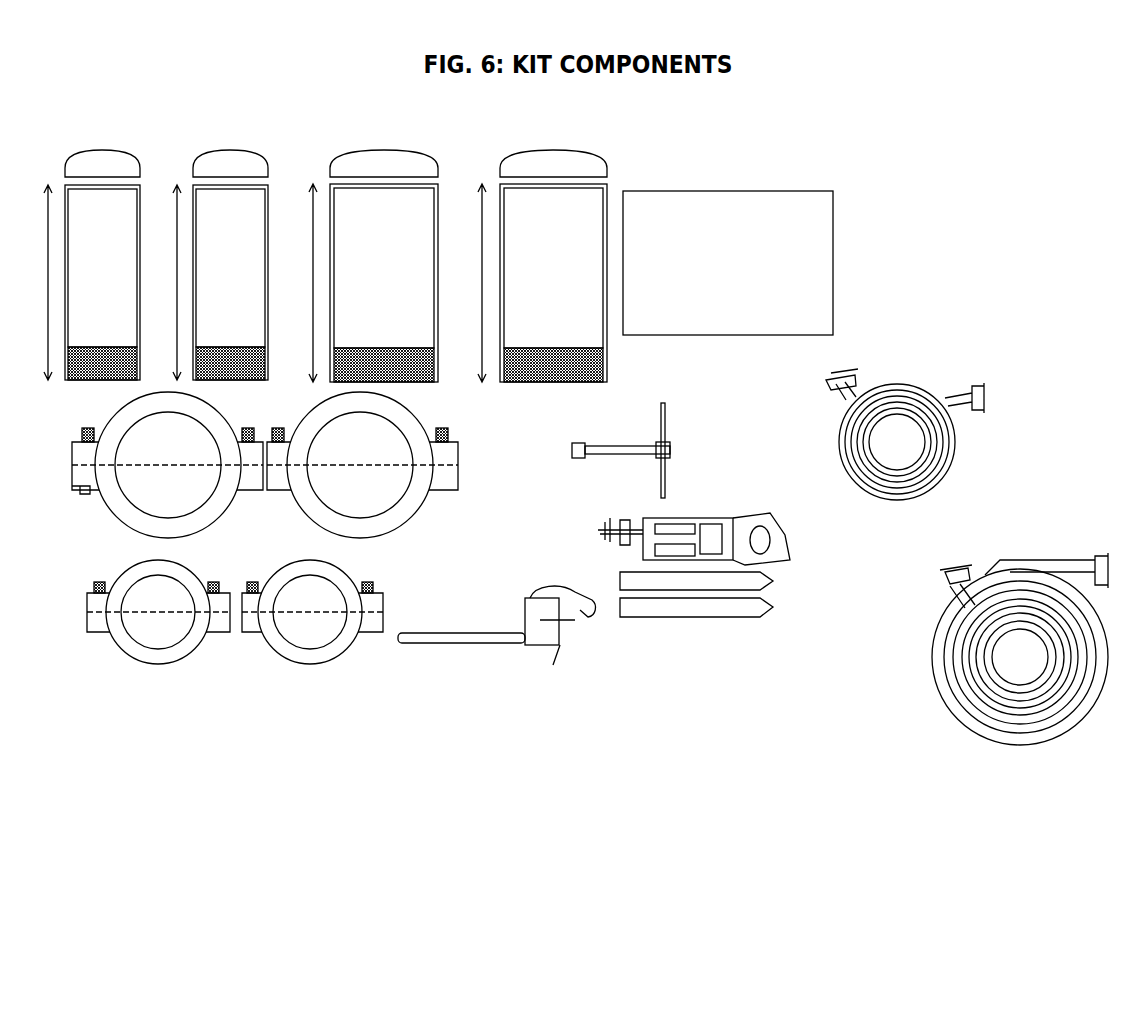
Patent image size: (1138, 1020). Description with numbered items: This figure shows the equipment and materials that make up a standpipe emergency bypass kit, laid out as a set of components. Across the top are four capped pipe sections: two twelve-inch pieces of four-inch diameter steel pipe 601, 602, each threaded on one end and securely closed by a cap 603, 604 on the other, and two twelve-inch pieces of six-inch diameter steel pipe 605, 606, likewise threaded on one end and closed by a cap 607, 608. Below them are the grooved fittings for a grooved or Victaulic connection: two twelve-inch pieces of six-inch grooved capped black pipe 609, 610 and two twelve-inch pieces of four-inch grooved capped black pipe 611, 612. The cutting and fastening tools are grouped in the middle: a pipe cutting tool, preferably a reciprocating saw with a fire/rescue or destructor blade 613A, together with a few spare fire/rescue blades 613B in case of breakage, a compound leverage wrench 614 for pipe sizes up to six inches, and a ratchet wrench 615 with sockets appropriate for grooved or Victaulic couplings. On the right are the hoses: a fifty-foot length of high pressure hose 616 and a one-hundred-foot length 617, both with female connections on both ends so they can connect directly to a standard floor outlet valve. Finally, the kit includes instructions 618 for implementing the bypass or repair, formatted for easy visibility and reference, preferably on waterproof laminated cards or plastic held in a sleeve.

The twelve inch piece of 4" diameter steel pipe 601 is at (84, 282).
The twelve inch piece of 4" diameter steel pipe 602 is at (212, 282).
The cap 603 is at (102, 163).
The cap 604 is at (230, 163).
The twelve inch piece of 6" diameter steel pipe 605 is at (365, 283).
The twelve inch piece of 6" diameter steel pipe 606 is at (534, 283).
The cap 607 is at (384, 163).
The cap 608 is at (553, 163).
The twelve inch piece of 6" grooved capped black pipe 609 is at (167, 465).
The twelve inch piece of 6" grooved capped black pipe 610 is at (362, 465).
The twelve inch piece of 4" grooved capped black pipe 611 is at (158, 612).
The twelve inch piece of 4" grooved capped black pipe 612 is at (312, 612).
The reciprocating saw with fire/rescue or destructor blade 613A is at (684, 550).
The spare fire/rescue blades 613B is at (721, 596).
The compound leverage wrench 614 is at (496, 625).
The ratchet wrench 615 is at (621, 450).
The 50' length high pressure hose 616 is at (905, 456).
The 100' length high pressure hose 617 is at (1020, 627).
The instructions 618 is at (728, 263).